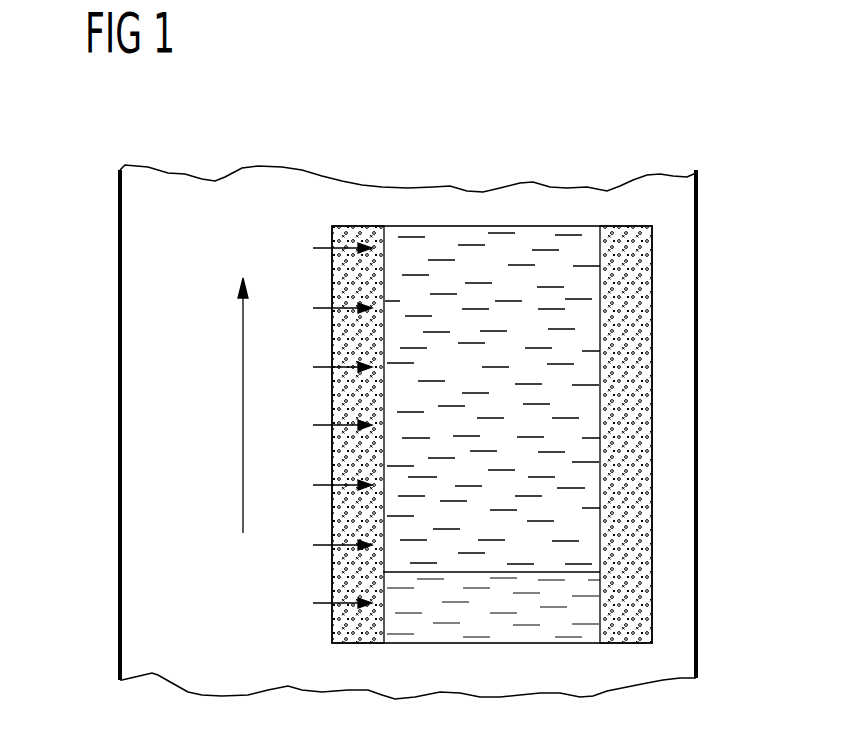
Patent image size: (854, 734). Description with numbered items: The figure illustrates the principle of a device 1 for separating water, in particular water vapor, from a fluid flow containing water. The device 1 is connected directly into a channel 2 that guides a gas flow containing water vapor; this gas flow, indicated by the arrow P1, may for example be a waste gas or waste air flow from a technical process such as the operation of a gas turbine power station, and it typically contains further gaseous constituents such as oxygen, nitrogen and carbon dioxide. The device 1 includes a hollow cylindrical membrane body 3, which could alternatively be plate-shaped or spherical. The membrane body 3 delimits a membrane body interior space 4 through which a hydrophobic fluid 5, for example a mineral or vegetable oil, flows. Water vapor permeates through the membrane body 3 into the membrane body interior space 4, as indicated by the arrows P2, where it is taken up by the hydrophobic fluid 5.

The device 1 is at (544, 104).
The channel 2 is at (698, 418).
The membrane body 3 is at (348, 226).
The membrane body interior space 4 is at (558, 228).
The hydrophobic fluid 5 is at (437, 240).
The arrow indicating gas flow P1 is at (242, 405).
The arrows indicating permeation P2 is at (314, 247).